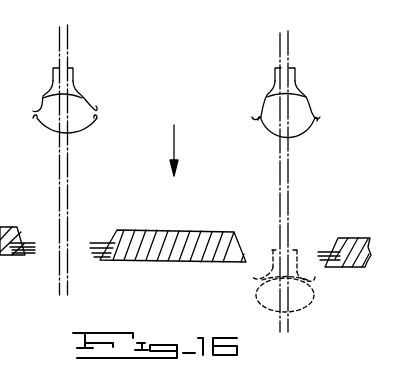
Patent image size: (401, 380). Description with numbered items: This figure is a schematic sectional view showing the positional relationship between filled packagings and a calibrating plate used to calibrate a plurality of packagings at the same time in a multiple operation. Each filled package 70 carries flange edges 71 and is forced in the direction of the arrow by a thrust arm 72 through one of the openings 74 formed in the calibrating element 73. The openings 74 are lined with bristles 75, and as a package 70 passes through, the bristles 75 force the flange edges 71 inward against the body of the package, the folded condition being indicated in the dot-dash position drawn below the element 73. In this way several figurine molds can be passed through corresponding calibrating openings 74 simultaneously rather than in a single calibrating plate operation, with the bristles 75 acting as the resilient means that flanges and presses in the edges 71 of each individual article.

The filled package 70 is at (97, 119).
The flange edge 71 is at (38, 110).
The thrust arm 72 is at (75, 83).
The calibrating plate element 73 is at (143, 262).
The opening 74 is at (28, 240).
The bristles 75 is at (98, 258).